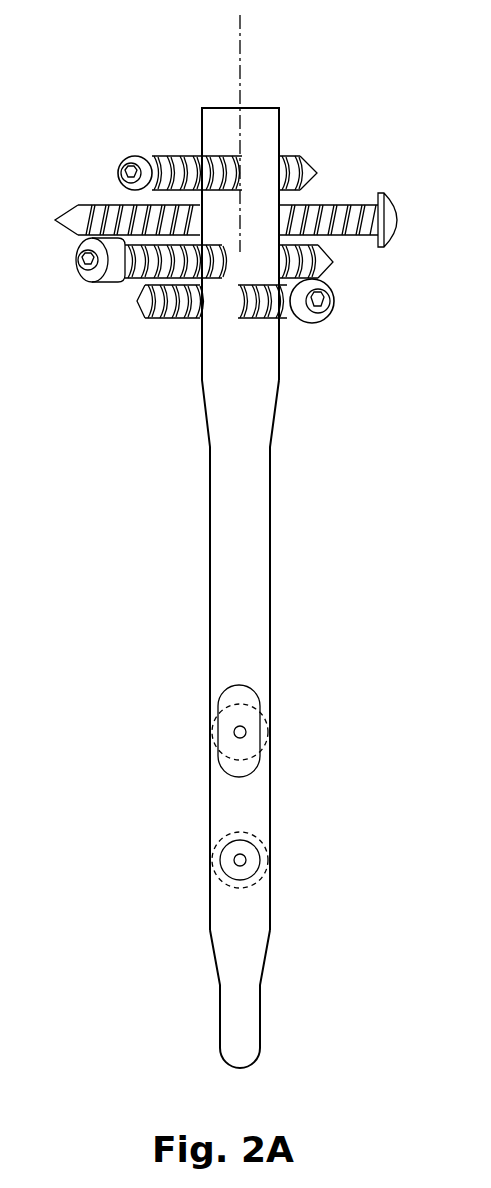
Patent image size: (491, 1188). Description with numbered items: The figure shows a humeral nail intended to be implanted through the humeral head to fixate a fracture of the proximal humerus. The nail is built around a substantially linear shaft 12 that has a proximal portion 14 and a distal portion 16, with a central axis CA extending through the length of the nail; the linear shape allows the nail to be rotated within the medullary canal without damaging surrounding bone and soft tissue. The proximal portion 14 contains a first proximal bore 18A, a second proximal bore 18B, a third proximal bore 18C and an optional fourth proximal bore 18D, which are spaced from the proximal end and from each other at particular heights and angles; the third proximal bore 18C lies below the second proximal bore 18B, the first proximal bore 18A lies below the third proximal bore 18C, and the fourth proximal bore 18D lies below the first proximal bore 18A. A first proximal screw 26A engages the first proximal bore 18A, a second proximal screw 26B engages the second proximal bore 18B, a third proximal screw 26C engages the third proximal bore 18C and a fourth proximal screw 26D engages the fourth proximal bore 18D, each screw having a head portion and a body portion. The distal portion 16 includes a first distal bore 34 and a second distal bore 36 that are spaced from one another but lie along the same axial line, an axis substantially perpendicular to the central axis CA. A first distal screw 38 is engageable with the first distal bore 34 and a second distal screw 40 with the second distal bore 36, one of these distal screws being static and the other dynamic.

The shaft 12 is at (198, 549).
The proximal portion 14 is at (194, 128).
The distal portion 16 is at (210, 1021).
The first proximal bore 18A is at (236, 263).
The second proximal bore 18B is at (260, 162).
The third proximal bore 18C is at (266, 211).
The fourth proximal bore 18D is at (242, 326).
The first proximal screw 26A is at (105, 272).
The second proximal screw 26B is at (147, 152).
The third proximal screw 26C is at (388, 232).
The fourth proximal screw 26D is at (322, 310).
The first distal bore 34 is at (235, 699).
The second distal bore 36 is at (232, 856).
The first distal screw 38 is at (225, 777).
The second distal screw 40 is at (240, 888).
The central axis CA is at (240, 63).